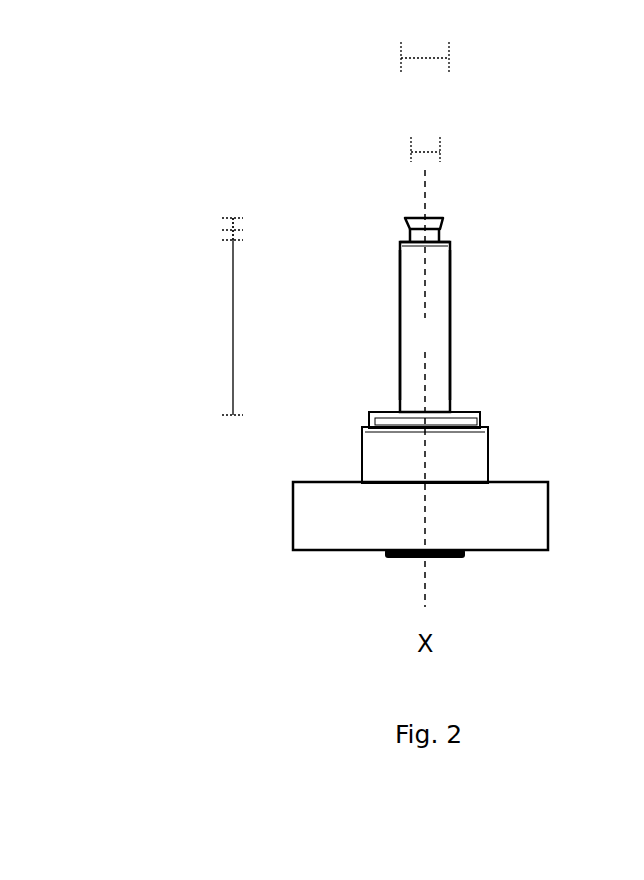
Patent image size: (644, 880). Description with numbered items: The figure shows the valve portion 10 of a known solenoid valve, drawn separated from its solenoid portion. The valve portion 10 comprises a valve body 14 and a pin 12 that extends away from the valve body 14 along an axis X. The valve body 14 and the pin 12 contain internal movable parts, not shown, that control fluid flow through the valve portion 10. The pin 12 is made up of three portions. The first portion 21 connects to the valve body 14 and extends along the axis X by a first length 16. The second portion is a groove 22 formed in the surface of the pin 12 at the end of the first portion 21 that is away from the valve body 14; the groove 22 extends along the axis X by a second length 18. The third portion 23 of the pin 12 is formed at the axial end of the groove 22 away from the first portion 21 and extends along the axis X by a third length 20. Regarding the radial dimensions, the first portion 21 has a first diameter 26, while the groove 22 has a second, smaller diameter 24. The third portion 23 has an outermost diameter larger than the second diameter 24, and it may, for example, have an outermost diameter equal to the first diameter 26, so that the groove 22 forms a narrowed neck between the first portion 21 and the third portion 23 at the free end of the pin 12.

The valve portion 10 is at (279, 136).
The pin 12 is at (440, 348).
The valve body 14 is at (243, 432).
The first length 16 is at (232, 335).
The second length 18 is at (232, 240).
The third length 20 is at (232, 223).
The first portion 21 is at (450, 370).
The groove 22 is at (442, 235).
The third portion 23 is at (441, 218).
The second diameter 24 is at (427, 134).
The first diameter 26 is at (425, 47).